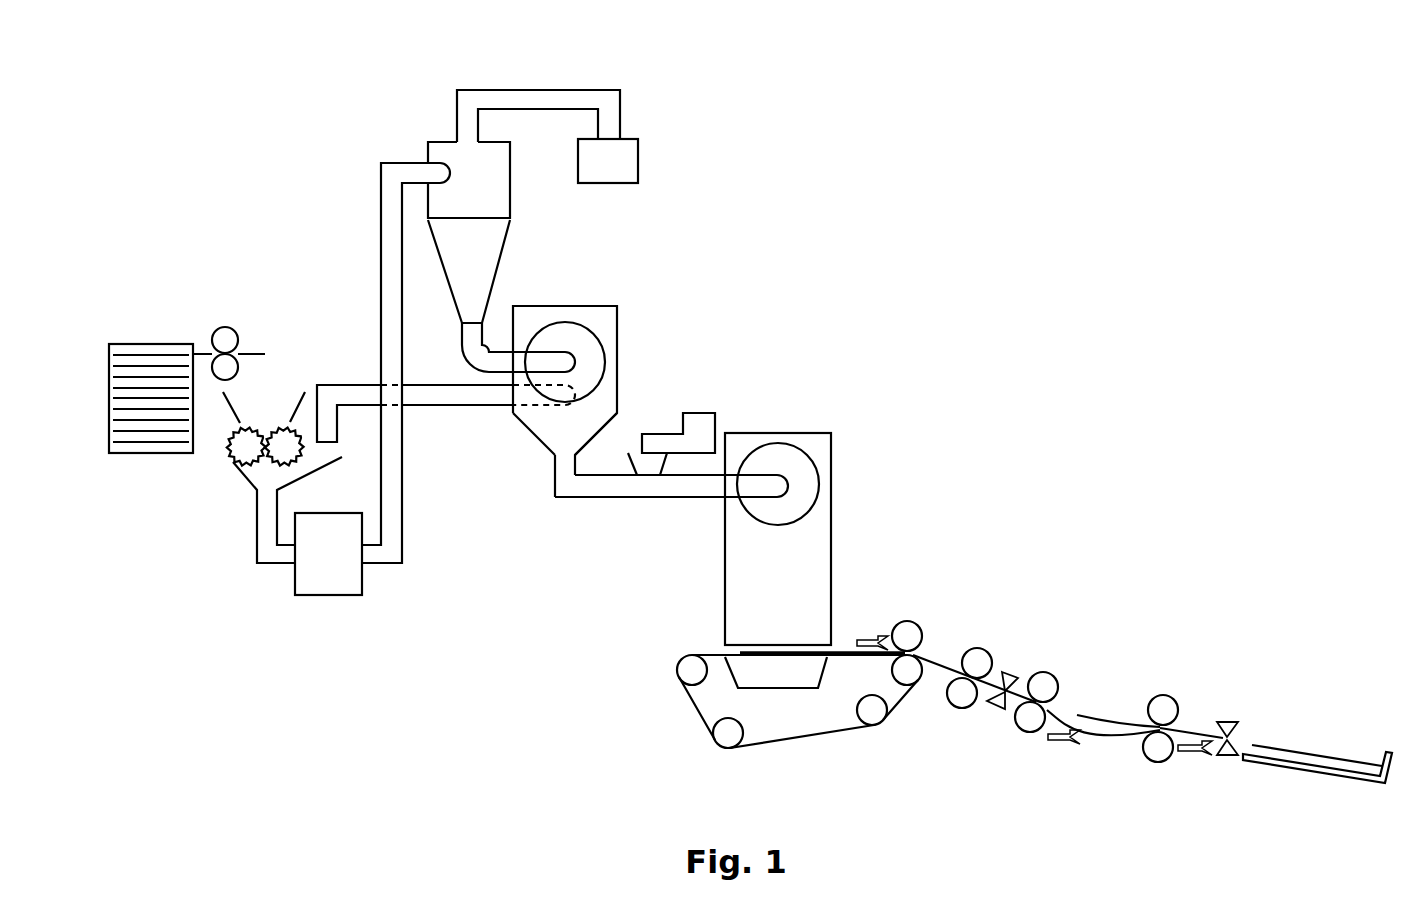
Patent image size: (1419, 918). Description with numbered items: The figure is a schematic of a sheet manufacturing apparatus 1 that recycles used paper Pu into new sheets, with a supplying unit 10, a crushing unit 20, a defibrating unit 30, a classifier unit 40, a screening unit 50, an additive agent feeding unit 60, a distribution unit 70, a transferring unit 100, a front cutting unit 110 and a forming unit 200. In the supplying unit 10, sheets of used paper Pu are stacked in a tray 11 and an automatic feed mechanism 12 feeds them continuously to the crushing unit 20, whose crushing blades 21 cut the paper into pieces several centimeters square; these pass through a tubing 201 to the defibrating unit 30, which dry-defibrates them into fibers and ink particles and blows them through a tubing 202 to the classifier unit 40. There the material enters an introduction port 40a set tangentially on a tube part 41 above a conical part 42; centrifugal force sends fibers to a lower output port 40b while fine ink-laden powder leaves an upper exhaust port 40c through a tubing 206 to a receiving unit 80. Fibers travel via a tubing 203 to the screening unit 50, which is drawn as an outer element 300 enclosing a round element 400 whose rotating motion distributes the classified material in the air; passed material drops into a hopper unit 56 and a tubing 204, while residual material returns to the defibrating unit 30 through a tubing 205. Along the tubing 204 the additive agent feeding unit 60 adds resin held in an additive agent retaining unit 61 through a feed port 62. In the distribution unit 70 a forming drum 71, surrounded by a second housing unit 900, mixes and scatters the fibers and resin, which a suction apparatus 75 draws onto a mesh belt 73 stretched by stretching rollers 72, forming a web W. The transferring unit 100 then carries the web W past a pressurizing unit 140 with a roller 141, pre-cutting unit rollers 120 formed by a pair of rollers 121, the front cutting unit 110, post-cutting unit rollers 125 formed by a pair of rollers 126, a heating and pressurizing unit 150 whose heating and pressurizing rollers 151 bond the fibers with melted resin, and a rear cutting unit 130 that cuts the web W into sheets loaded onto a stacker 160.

The sheet manufacturing apparatus 1 is at (838, 113).
The supplying unit 10 is at (153, 332).
The tray 11 is at (130, 455).
The automatic feed mechanism 12 is at (208, 330).
The crushing unit 20 is at (275, 390).
The crushing blades 21 is at (233, 455).
The defibrating unit 30 is at (335, 510).
The classifier unit 40 is at (528, 219).
The introduction port 40a is at (433, 168).
The lower output port 40b is at (487, 326).
The upper exhaust port 40c is at (455, 147).
The tube part 41 is at (500, 183).
The conical part 42 is at (455, 275).
The screening unit 50 is at (652, 260).
The hopper unit 56 is at (543, 435).
The additive agent feeding unit 60 is at (675, 388).
The additive agent retaining unit 61 is at (700, 423).
The feed port 62 is at (637, 457).
The distribution unit 70 is at (872, 455).
The forming drum 71 is at (777, 442).
The stretching rollers 72 is at (692, 655).
The mesh belt 73 is at (755, 747).
The suction apparatus 75 is at (747, 678).
The receiving unit 80 is at (650, 132).
The transferring unit 100 is at (1000, 467).
The front cutting unit 110 is at (990, 713).
The pre-cutting unit rollers 120 is at (1038, 608).
The pair of rollers 121 is at (983, 653).
The post-cutting unit rollers 125 is at (1085, 635).
The pair of rollers 126 is at (1045, 677).
The rear cutting unit 130 is at (1242, 710).
The pressurizing unit 140 is at (960, 562).
The roller 141 is at (920, 627).
The heating and pressurizing unit 150 is at (1183, 675).
The heating and pressurizing rollers 151 is at (1165, 707).
The stacker 160 is at (1342, 787).
The forming unit 200 is at (1048, 455).
The tubing 201 is at (253, 535).
The tubing 202 is at (380, 210).
The tubing 203 is at (490, 370).
The tubing 204 is at (572, 498).
The tubing 205 is at (442, 406).
The tubing 206 is at (547, 100).
The mixing housing 300 is at (600, 312).
The mixing blower 400 is at (578, 333).
The second housing unit 900 is at (812, 433).
The used paper Pu is at (250, 352).
The web W is at (853, 645).